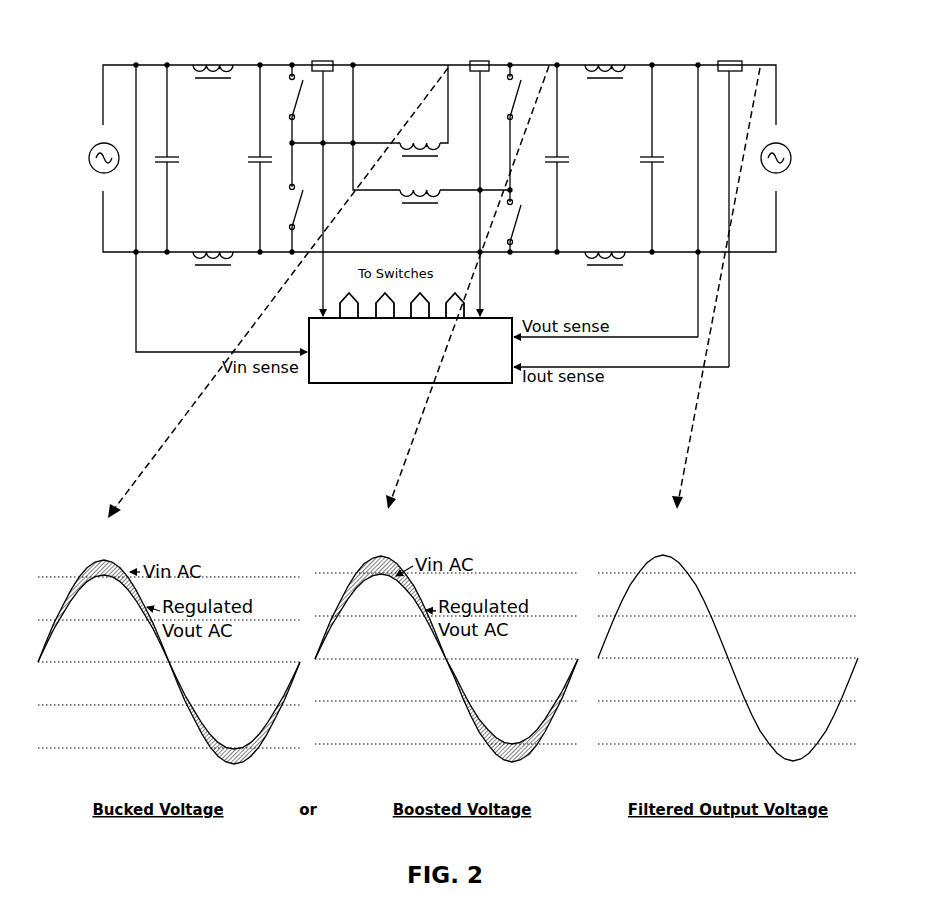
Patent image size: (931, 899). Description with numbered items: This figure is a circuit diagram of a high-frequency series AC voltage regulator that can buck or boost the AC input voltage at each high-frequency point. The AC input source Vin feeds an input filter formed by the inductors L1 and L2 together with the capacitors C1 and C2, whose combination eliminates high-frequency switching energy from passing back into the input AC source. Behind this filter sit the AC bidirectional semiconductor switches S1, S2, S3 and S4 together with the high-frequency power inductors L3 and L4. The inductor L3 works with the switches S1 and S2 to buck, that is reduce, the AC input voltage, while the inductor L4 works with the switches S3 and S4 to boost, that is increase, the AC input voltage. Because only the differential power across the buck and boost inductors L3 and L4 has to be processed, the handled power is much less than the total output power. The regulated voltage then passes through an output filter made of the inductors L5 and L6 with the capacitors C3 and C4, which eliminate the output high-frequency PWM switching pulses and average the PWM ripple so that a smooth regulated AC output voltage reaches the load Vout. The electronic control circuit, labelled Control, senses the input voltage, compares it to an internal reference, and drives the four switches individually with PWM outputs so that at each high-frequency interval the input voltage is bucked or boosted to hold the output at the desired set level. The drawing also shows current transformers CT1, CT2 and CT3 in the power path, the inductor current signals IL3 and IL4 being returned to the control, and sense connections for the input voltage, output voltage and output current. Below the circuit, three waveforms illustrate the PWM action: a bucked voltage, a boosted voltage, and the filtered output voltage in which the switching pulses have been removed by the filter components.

The input filter inductor L1 is at (213, 58).
The input filter inductor L2 is at (213, 245).
The buck inductor L3 is at (420, 136).
The boost inductor L4 is at (420, 183).
The output filter inductor L5 is at (605, 58).
The output filter inductor L6 is at (605, 245).
The input filter capacitor C1 is at (181, 158).
The input filter capacitor C2 is at (246, 158).
The output filter capacitor C3 is at (571, 158).
The output filter capacitor C4 is at (637, 158).
The AC bidirectional semiconductor switch S1 is at (285, 97).
The AC bidirectional semiconductor switch S2 is at (285, 207).
The AC bidirectional semiconductor switch S3 is at (503, 97).
The AC bidirectional semiconductor switch S4 is at (526, 222).
The current transformer CT1 is at (480, 177).
The current transformer CT2 is at (324, 177).
The current transformer CT3 is at (729, 202).
The inductor L3 current signal IL3 is at (492, 285).
The inductor L4 current signal IL4 is at (310, 285).
The AC input voltage source Vin is at (89, 158).
The AC output voltage source / load Vout is at (796, 158).
The electronic control circuit Control is at (410, 350).